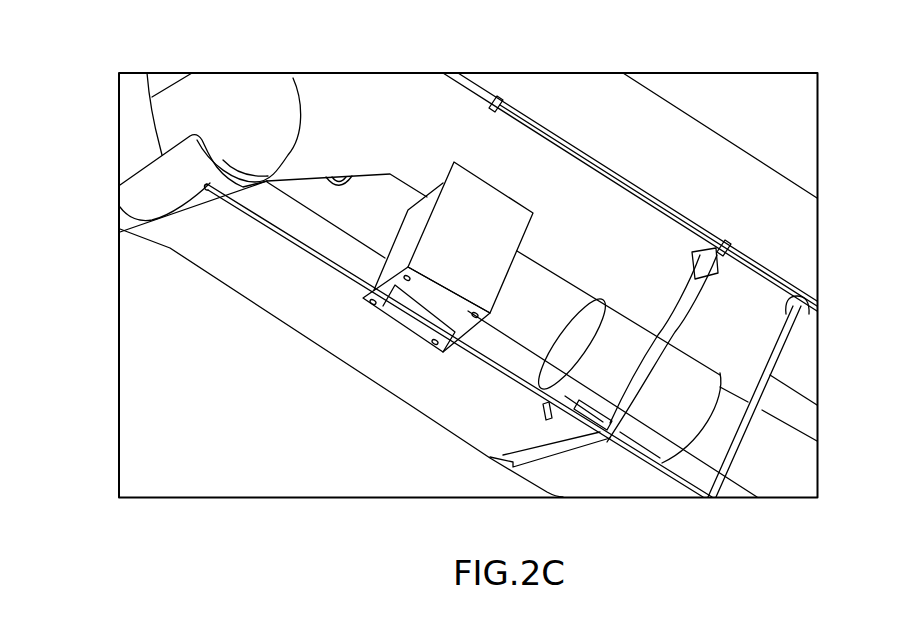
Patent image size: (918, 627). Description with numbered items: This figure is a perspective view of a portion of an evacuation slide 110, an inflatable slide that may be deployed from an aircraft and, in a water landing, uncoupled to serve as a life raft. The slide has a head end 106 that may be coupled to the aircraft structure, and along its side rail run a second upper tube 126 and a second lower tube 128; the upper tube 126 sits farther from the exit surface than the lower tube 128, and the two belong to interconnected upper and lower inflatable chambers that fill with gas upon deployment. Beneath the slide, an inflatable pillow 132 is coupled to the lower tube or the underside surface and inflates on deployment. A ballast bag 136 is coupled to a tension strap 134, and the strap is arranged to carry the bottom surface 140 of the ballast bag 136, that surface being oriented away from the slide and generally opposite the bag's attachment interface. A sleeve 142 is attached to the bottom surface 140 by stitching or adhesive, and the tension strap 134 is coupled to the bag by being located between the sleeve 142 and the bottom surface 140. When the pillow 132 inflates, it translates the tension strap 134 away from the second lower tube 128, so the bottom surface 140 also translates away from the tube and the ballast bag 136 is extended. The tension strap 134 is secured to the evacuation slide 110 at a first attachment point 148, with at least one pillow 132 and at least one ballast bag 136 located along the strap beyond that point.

The head end 106 is at (173, 93).
The evacuation slide 110 is at (680, 62).
The second upper tube 126 is at (723, 175).
The second lower tube 128 is at (628, 240).
The pillow 132 is at (687, 368).
The tension strap 134 is at (686, 307).
The ballast bag 136 is at (510, 225).
The bottom surface 140 is at (463, 322).
The sleeve 142 is at (403, 308).
The first attachment point 148 is at (200, 183).